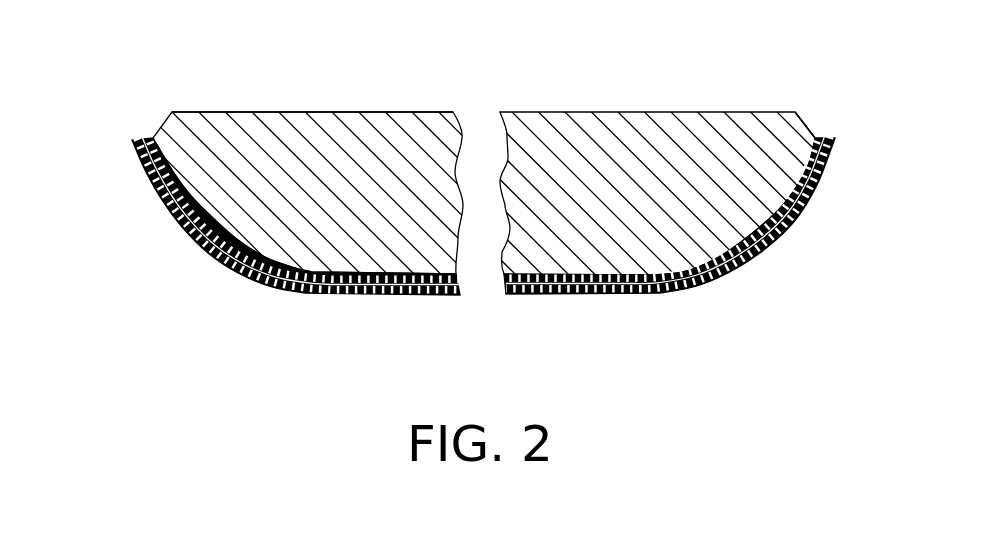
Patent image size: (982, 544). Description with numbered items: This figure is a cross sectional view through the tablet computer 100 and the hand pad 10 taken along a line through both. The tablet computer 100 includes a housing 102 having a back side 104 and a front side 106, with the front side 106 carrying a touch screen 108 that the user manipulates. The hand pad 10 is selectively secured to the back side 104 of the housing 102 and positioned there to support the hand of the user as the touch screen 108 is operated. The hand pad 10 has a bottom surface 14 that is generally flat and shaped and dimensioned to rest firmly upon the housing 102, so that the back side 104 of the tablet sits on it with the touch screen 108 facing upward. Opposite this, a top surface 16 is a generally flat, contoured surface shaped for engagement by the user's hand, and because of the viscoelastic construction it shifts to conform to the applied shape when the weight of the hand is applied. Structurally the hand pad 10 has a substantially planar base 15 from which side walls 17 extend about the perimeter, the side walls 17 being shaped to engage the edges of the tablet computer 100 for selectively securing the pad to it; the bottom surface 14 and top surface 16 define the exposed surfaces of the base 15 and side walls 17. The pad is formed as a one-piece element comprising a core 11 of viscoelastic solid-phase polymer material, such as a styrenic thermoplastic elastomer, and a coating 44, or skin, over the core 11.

The hand pad 10 is at (158, 238).
The tablet computer 100 is at (653, 132).
The housing 102 is at (807, 121).
The back side 104 is at (243, 242).
The front side 106 is at (225, 111).
The touch screen 108 is at (348, 111).
The core 11 is at (313, 294).
The bottom surface 14 is at (358, 274).
The base 15 is at (618, 294).
The top surface 16 is at (528, 295).
The side walls 17 is at (147, 187).
The coating 44 is at (701, 283).